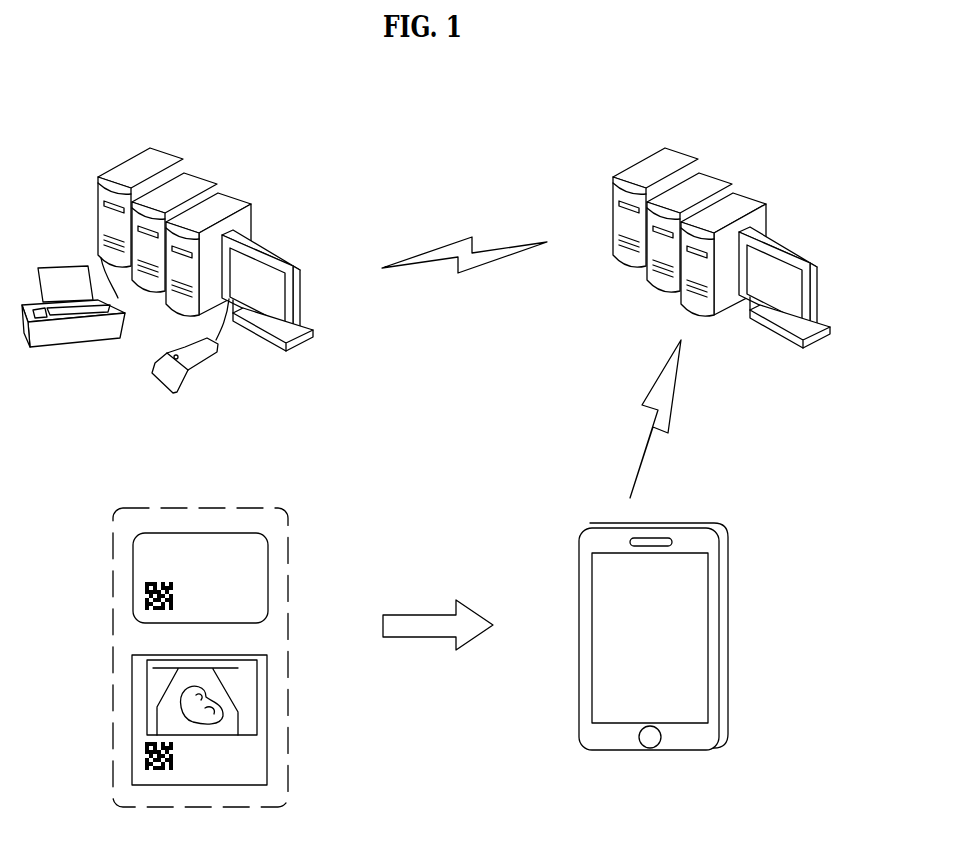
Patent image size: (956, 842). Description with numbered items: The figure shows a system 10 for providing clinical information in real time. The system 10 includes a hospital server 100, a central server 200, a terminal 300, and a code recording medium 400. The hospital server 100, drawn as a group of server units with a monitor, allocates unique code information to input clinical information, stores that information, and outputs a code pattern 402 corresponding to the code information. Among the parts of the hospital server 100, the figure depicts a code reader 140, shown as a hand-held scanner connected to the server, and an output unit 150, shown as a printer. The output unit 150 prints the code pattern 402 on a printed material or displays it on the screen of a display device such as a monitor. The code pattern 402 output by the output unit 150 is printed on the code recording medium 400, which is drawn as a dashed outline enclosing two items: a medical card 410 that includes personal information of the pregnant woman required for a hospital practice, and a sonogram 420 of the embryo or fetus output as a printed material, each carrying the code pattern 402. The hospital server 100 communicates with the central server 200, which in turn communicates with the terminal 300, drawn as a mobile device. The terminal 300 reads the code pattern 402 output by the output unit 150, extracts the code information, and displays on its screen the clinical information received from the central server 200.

The system for providing clinical information in real time 10 is at (462, 107).
The hospital server 100 is at (241, 150).
The code reader 140 is at (219, 350).
The output unit 150 is at (82, 345).
The central server 200 is at (765, 162).
The terminal 300 is at (707, 498).
The code recording medium 400 is at (242, 498).
The code pattern 402 is at (143, 595).
The medical card 410 is at (268, 573).
The sonogram 420 is at (268, 713).